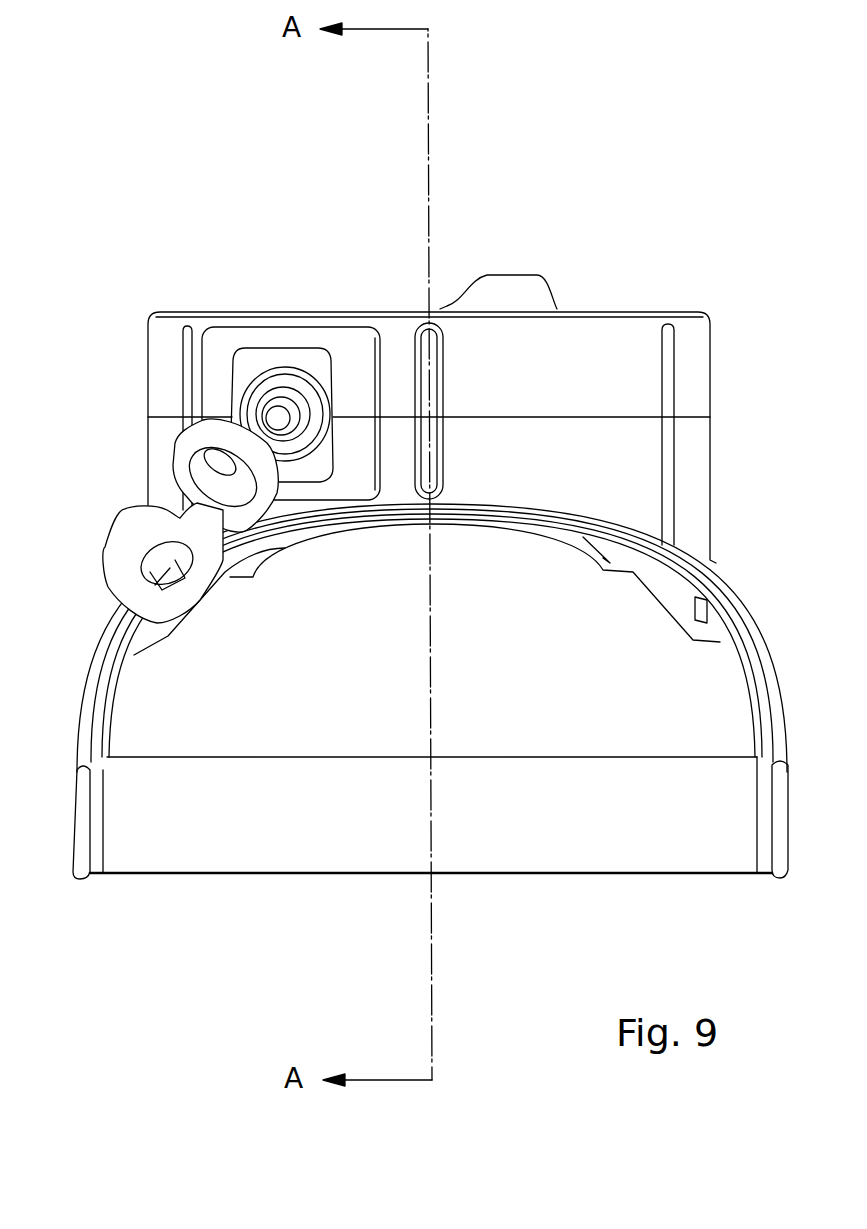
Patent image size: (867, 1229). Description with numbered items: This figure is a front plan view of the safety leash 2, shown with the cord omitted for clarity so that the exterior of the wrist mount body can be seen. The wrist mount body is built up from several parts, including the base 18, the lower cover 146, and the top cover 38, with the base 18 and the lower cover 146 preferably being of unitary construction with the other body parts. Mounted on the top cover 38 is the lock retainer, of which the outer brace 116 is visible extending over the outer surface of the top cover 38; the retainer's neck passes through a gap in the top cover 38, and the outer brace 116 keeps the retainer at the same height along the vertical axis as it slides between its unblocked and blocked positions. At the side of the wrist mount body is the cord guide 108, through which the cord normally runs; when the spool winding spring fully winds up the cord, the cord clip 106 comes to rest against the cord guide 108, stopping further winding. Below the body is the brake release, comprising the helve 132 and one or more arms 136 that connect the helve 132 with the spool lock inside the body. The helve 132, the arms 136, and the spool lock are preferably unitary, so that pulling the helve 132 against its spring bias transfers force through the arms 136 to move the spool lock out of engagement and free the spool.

The safety leash 2 is at (604, 184).
The base 18 is at (128, 689).
The top cover 38 is at (548, 373).
The cord clip 106 is at (128, 530).
The cord guide 108 is at (248, 362).
The outer brace 116 is at (556, 306).
The helve 132 is at (637, 837).
The arms 136 is at (760, 608).
The lower cover 146 is at (562, 466).